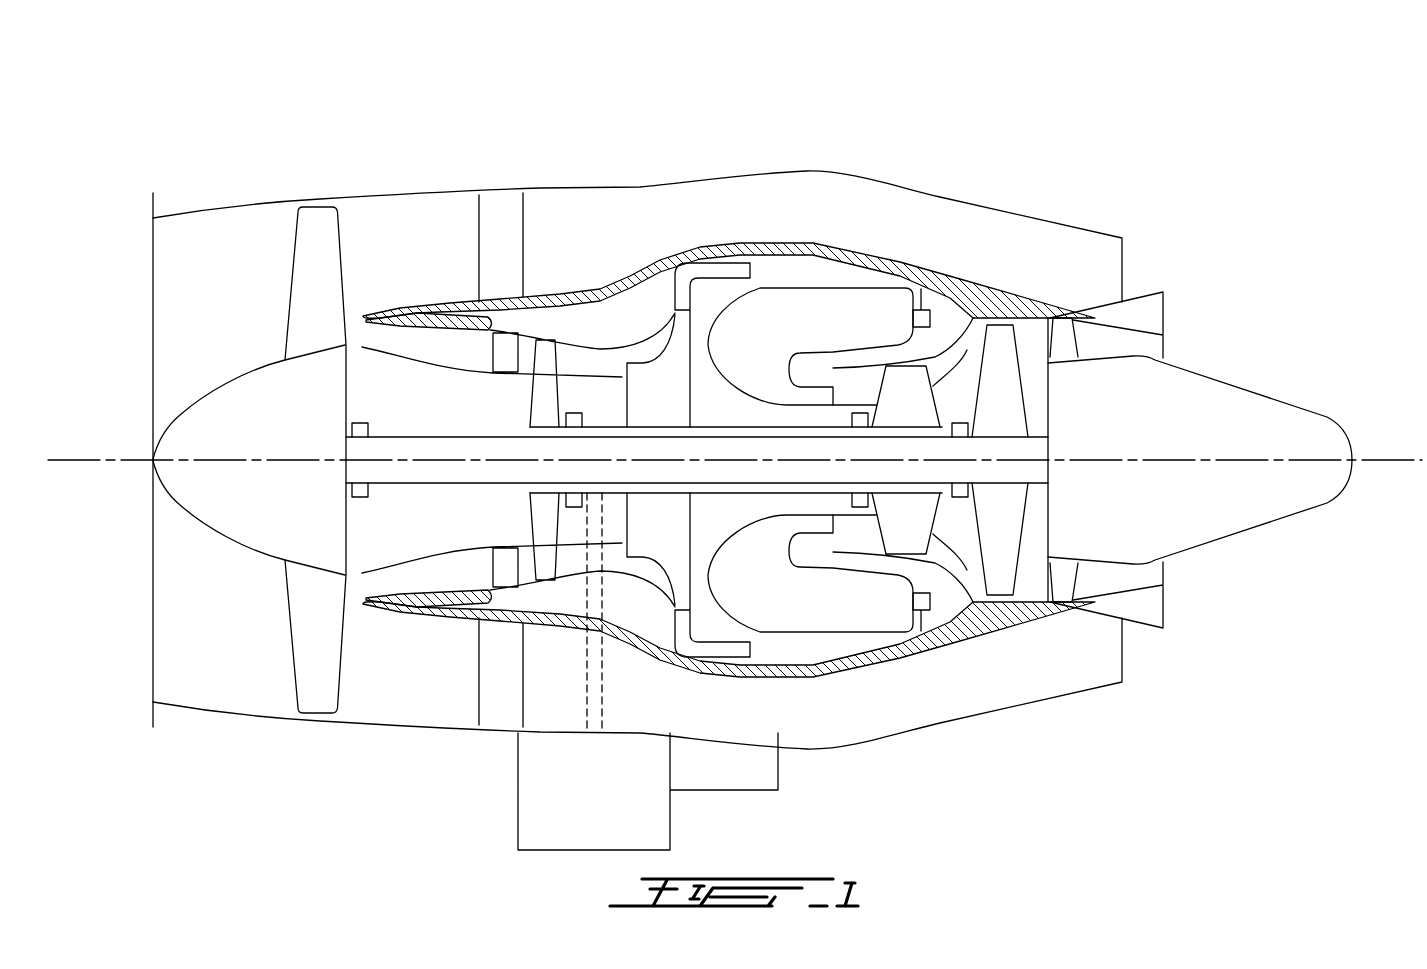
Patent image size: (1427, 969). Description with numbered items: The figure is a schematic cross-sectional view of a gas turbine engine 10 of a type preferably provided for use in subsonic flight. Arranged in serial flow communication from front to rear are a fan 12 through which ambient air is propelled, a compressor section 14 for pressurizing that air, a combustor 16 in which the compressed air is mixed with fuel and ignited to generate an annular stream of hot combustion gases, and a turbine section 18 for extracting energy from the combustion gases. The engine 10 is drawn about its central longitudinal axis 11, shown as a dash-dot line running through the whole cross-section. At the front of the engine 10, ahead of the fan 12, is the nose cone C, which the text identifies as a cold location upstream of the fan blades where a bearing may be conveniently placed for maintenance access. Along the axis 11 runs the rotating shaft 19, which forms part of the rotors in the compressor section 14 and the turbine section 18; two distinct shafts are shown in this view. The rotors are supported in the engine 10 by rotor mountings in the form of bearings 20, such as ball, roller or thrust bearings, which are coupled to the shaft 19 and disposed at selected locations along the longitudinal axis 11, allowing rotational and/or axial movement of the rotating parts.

The gas turbine engine 10 is at (1038, 134).
The central longitudinal axis 11 is at (1390, 458).
The nose cone C is at (192, 443).
The fan 12 is at (312, 621).
The compressor section 14 is at (602, 427).
The combustor 16 is at (813, 310).
The turbine section 18 is at (953, 532).
The rotating shaft 19 is at (597, 360).
The bearings 20 is at (360, 488).